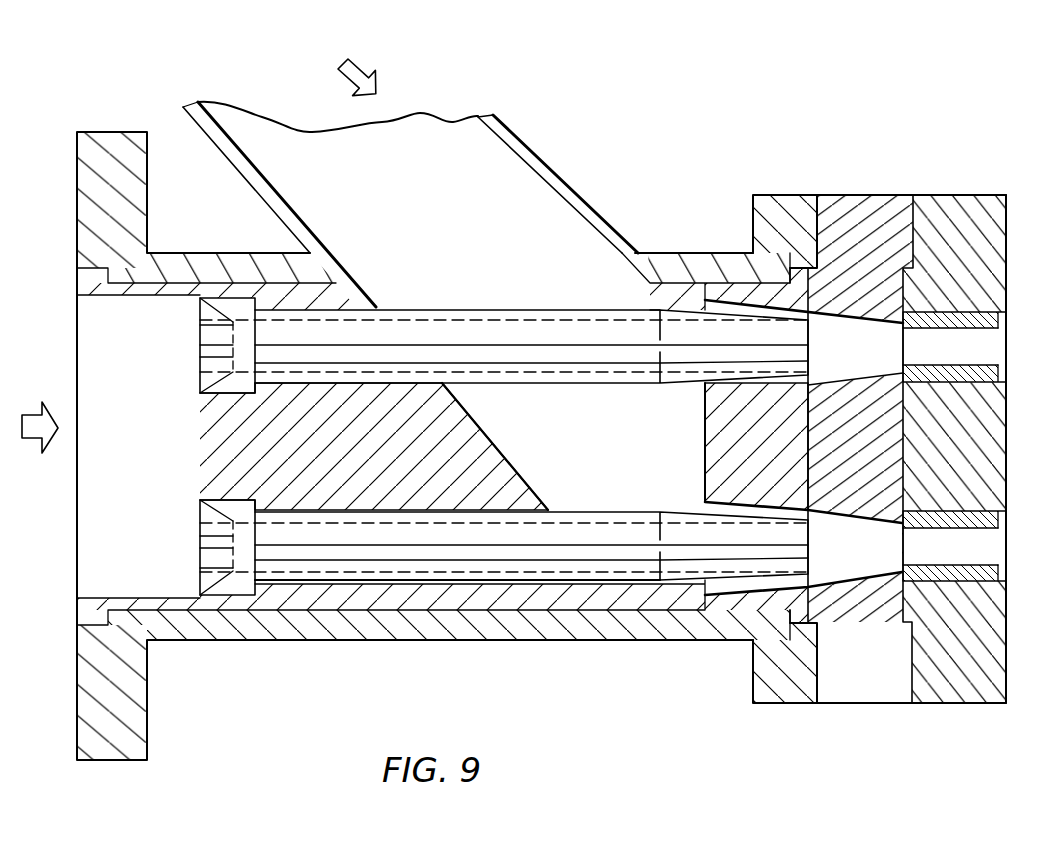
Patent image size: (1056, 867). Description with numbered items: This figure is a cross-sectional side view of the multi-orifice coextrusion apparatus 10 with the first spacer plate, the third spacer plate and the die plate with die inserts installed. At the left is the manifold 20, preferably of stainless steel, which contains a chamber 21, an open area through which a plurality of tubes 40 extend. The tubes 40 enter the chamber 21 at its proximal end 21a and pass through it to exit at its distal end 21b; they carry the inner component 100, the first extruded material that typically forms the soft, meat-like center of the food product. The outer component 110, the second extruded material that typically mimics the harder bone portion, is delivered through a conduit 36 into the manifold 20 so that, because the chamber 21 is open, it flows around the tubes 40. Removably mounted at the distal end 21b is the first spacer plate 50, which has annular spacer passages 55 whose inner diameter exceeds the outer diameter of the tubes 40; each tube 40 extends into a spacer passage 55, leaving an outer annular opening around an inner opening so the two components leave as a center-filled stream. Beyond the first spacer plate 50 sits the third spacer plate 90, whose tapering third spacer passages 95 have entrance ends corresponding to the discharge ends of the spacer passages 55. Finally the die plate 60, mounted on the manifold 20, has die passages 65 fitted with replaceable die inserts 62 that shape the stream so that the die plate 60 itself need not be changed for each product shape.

The multi-orifice coextrusion apparatus 10 is at (712, 193).
The manifold 20 is at (317, 641).
The chamber 21 is at (584, 497).
The proximal end 21a is at (492, 441).
The distal end 21b is at (704, 405).
The conduit 36 is at (574, 196).
The tubes 40 is at (445, 308).
The first spacer plate 50 is at (704, 450).
The spacer passages 55 is at (703, 300).
The die plate 60 is at (1007, 268).
The die inserts 62 is at (1007, 318).
The die passages 65 is at (937, 359).
The third spacer plate 90 is at (868, 194).
The third spacer passages 95 is at (832, 359).
The inner component 100 is at (38, 407).
The outer component 110 is at (337, 64).